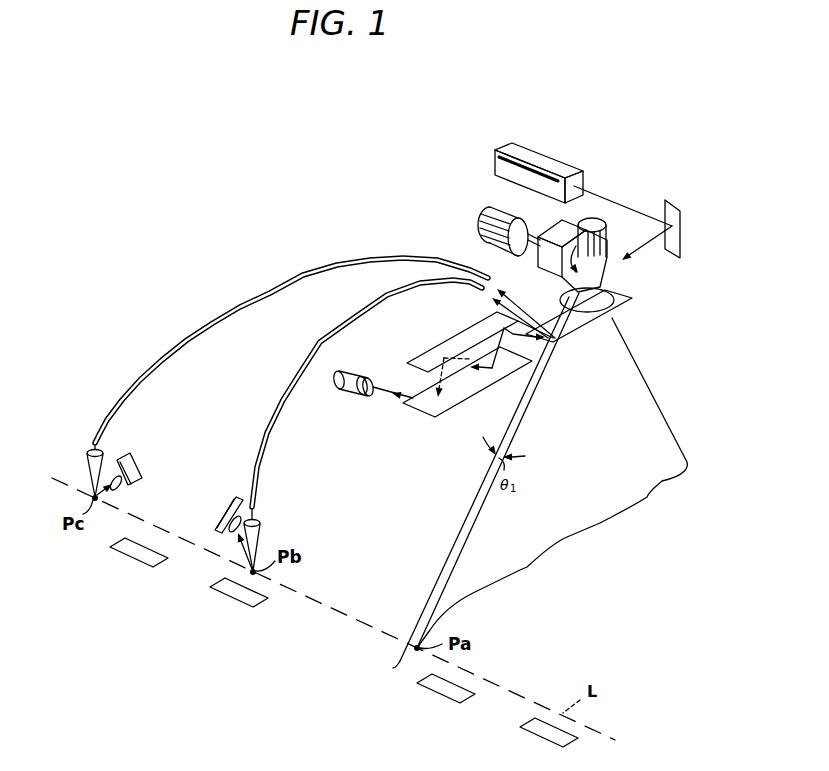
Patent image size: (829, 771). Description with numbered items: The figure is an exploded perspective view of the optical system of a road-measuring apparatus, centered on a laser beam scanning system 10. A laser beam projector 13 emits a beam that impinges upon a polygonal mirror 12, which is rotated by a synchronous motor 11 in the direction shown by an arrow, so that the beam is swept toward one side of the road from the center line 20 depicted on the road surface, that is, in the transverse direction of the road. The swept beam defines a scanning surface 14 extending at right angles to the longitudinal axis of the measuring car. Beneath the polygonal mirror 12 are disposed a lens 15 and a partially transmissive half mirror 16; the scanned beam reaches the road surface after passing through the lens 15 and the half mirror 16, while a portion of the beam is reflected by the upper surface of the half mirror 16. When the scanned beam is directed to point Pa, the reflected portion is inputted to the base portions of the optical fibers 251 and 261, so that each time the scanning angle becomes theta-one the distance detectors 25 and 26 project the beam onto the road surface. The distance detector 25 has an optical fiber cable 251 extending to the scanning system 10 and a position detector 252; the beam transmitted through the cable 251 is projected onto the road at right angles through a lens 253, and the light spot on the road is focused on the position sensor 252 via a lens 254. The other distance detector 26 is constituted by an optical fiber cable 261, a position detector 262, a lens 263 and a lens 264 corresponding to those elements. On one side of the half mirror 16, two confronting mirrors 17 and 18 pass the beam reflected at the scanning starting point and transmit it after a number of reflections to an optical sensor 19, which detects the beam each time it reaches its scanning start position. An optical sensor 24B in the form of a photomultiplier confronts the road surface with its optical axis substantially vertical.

The laser beam scanning system 10 is at (404, 168).
The synchronous motor 11 is at (476, 213).
The polygonal mirror 12 is at (548, 262).
The laser beam projector 13 is at (530, 148).
The scanning surface 14 is at (653, 425).
The lens 15 is at (603, 299).
The partially transmissive mirror (half mirror) 16 is at (622, 305).
The mirror 17 is at (455, 336).
The mirror 18 is at (445, 410).
The optical sensor 19 is at (362, 381).
The center line 20 is at (230, 603).
The optical sensor 24B is at (603, 218).
The distance detector 25 is at (276, 506).
The optical fiber cable 251 is at (277, 418).
The position detector (position sensor) 252 is at (233, 505).
The lens 253 is at (262, 526).
The lens 254 is at (227, 534).
The distance detector 26 is at (128, 438).
The optical fiber cable 261 is at (187, 341).
The position detector 262 is at (141, 470).
The lens 263 is at (88, 452).
The lens 264 is at (125, 489).